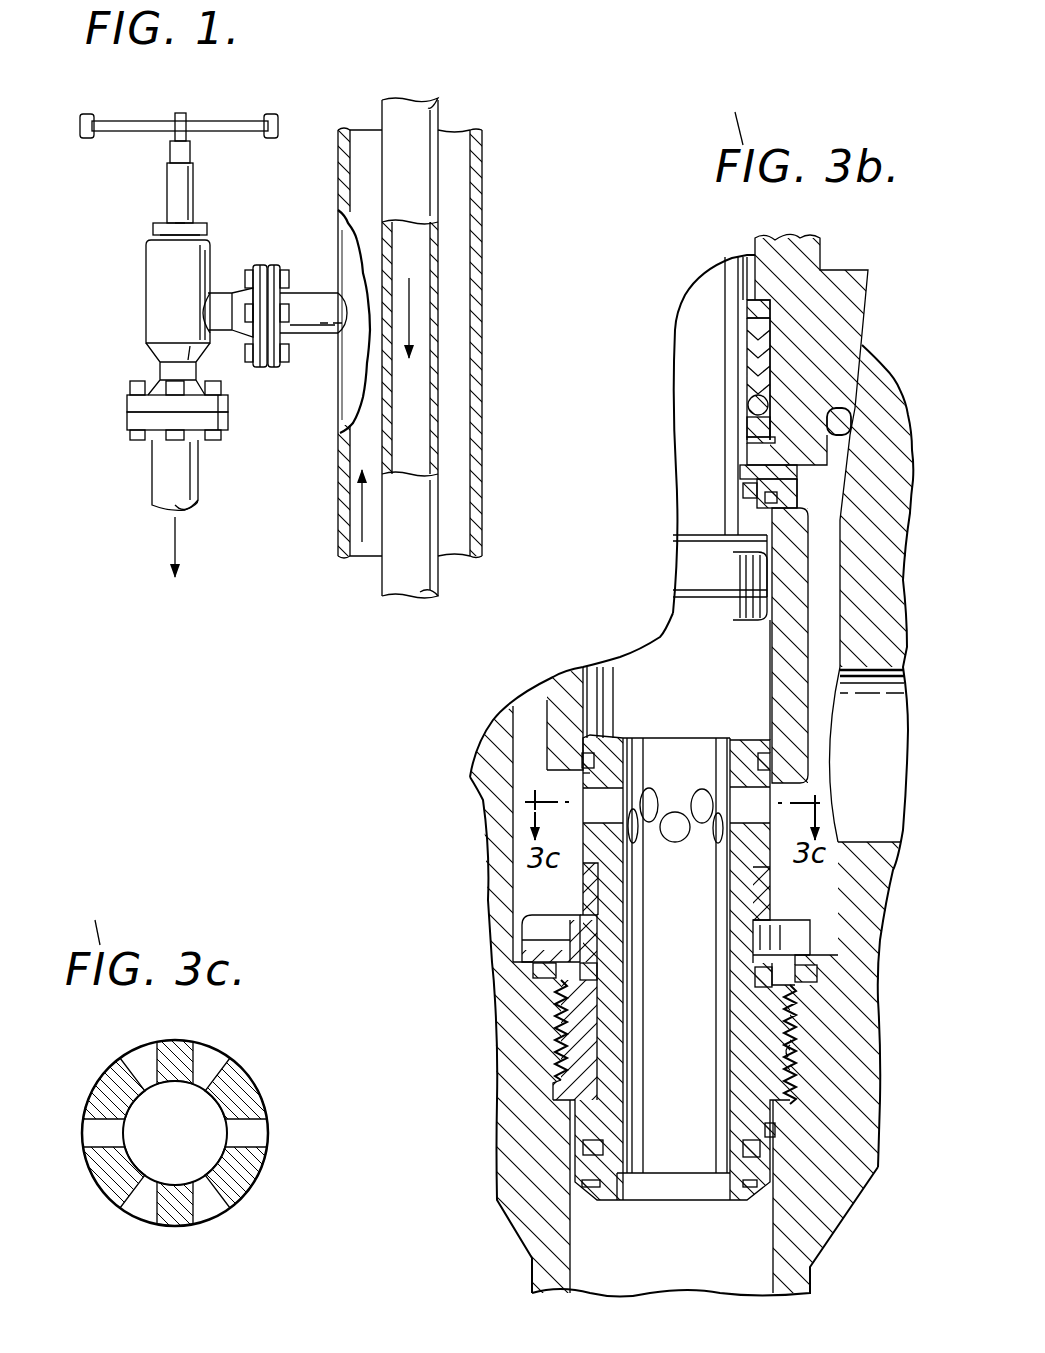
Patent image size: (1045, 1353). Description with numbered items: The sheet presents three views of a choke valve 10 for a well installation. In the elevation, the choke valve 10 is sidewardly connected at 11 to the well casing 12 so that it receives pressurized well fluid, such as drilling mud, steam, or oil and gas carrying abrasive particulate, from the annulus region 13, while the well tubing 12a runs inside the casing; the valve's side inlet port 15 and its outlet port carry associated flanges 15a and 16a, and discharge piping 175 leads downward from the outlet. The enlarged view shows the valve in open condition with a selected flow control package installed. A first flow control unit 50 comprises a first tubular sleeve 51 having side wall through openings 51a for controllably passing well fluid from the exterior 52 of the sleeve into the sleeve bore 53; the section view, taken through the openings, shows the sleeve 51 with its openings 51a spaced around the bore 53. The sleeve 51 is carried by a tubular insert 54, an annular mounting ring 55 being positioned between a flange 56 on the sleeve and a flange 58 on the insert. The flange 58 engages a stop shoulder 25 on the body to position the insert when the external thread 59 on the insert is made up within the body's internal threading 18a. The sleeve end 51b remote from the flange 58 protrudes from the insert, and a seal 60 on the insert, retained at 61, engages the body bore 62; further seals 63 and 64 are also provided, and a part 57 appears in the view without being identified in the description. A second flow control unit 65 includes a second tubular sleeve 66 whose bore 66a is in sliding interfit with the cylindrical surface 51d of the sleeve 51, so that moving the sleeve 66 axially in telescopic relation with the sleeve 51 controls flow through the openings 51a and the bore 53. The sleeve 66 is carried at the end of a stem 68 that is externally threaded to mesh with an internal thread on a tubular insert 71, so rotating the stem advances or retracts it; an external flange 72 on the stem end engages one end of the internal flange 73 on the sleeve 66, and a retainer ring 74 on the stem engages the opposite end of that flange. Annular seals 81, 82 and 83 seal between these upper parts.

In FIG. 1, the choke valve 10 is at (130, 297).
In FIG. 1, the sideward connection 11 is at (283, 250).
In FIG. 1, the well casing 12 is at (482, 263).
In FIG. 1, the well tubing 12a is at (440, 427).
In FIG. 1, the annulus region 13 is at (355, 450).
In FIG. 3B, the side inlet port 15 is at (876, 756).
In FIG. 1, the flange 15a is at (262, 367).
In FIG. 1, the flange 16a is at (125, 408).
In FIG. 1, the discharge piping 175 is at (160, 485).
In FIG. 3B, the internal threading 18a is at (786, 1054).
In FIG. 3B, the stop shoulder 25 is at (775, 962).
In FIG. 3B, the first flow control unit 50 is at (560, 893).
In FIG. 3B, the first tubular sleeve 51 is at (713, 920).
In FIG. 3C, the first tubular sleeve 51 is at (185, 1158).
In FIG. 3B, the side wall through openings 51a is at (673, 812).
In FIG. 3C, the side wall through openings 51a is at (82, 1130).
In FIG. 3B, the sleeve end 51b is at (733, 1183).
In FIG. 3B, the cylindrical surface 51d is at (585, 775).
In FIG. 3B, the sleeve exterior 52 is at (807, 793).
In FIG. 3B, the sleeve bore 53 is at (682, 978).
In FIG. 3C, the sleeve bore 53 is at (179, 1140).
In FIG. 3B, the tubular insert 54 is at (570, 1037).
In FIG. 3B, the annular mounting ring 55 is at (560, 942).
In FIG. 3B, the flange on the sleeve 56 is at (763, 890).
In FIG. 3B, the housing shoulder 57 is at (838, 870).
In FIG. 3B, the flange on the insert 58 is at (530, 968).
In FIG. 3B, the external thread 59 is at (797, 1013).
In FIG. 3B, the seal 60 is at (776, 1130).
In FIG. 3B, the seal retainer 61 is at (560, 1148).
In FIG. 3B, the body bore 62 is at (780, 1228).
In FIG. 3B, the seal 63 is at (757, 980).
In FIG. 3B, the seal 64 is at (580, 758).
In FIG. 3B, the second flow control unit 65 is at (813, 552).
In FIG. 3B, the second tubular sleeve 66 is at (560, 703).
In FIG. 3B, the bore of second sleeve 66a is at (760, 635).
In FIG. 3B, the stem 68 is at (685, 450).
In FIG. 3B, the tubular insert 71 is at (852, 303).
In FIG. 3B, the external flange 72 is at (687, 577).
In FIG. 3B, the internal flange 73 is at (748, 545).
In FIG. 3B, the retainer ring 74 is at (798, 480).
In FIG. 3B, the annular seal 81 is at (760, 527).
In FIG. 3B, the annular seal 82 is at (745, 403).
In FIG. 3B, the annular seal 83 is at (852, 420).